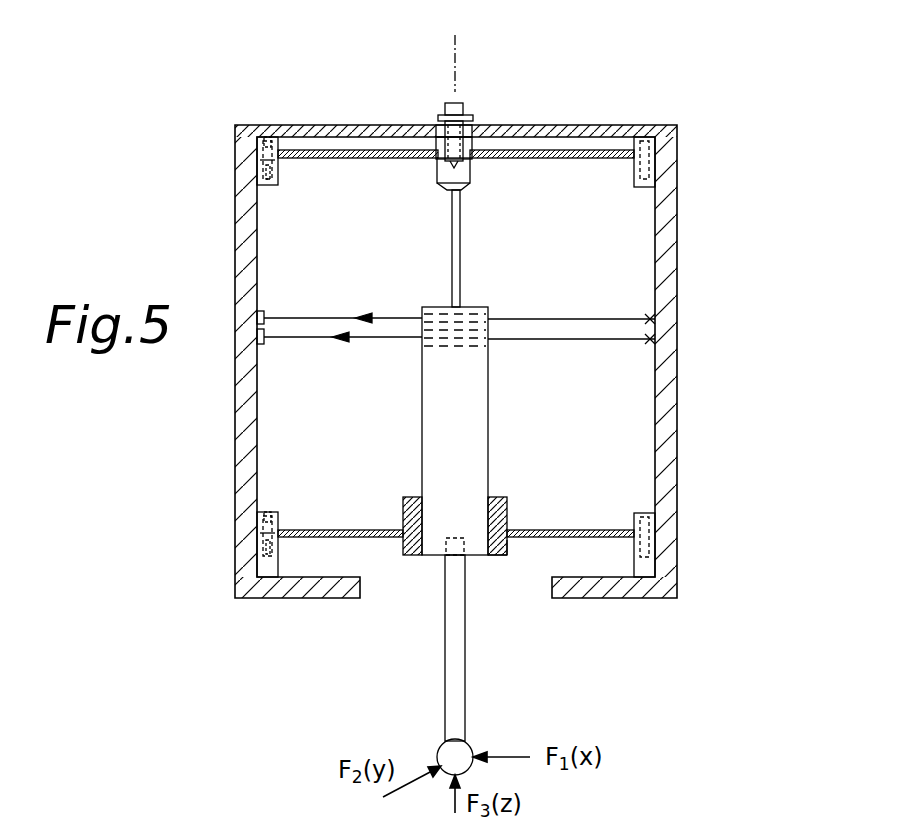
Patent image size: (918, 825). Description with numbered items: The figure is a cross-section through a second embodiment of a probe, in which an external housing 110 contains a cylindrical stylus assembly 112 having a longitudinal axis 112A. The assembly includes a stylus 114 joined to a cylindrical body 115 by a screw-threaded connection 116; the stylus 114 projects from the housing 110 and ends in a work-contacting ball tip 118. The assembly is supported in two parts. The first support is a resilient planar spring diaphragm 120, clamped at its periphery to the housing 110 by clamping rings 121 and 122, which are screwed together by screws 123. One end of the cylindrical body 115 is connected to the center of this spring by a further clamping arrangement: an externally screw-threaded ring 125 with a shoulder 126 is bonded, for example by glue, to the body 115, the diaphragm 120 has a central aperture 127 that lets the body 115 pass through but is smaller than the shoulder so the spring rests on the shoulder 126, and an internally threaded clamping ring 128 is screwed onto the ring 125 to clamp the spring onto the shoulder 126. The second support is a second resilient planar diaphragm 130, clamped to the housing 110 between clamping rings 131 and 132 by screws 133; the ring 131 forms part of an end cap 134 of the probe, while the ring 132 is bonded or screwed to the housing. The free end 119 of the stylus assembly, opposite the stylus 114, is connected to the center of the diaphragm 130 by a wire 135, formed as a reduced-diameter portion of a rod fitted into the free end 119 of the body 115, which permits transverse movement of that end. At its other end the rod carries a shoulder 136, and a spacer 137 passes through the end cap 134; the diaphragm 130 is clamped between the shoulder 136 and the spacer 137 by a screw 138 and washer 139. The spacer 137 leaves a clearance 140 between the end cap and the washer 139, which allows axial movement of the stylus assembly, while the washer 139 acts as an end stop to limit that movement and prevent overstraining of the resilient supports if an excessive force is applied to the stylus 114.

The external housing 110 is at (677, 297).
The cylindrical stylus assembly 112 is at (456, 406).
The longitudinal axis 112A is at (455, 70).
The stylus 114 is at (467, 674).
The cylindrical body 115 is at (489, 406).
The screw-threaded connection 116 is at (445, 556).
The work-contacting ball tip 118 is at (468, 750).
The free end 119 is at (478, 306).
The resilient planar spring diaphragm 120 is at (580, 530).
The clamping ring 121 is at (257, 522).
The clamping ring 122 is at (258, 562).
The screws 123 is at (276, 506).
The externally screw-threaded ring 125 is at (495, 500).
The shoulder 126 is at (500, 556).
The central aperture 127 is at (508, 548).
The clamping ring 128 is at (402, 505).
The second resilient planar diaphragm 130 is at (603, 159).
The clamping ring 131 is at (257, 140).
The clamping ring 132 is at (257, 170).
The screws 133 is at (268, 124).
The end cap 134 is at (592, 124).
The wire 135 is at (451, 236).
The shoulder 136 is at (478, 160).
The spacer 137 is at (410, 125).
The screw 138 is at (462, 108).
The washer 139 is at (476, 118).
The clearance 140 is at (438, 124).